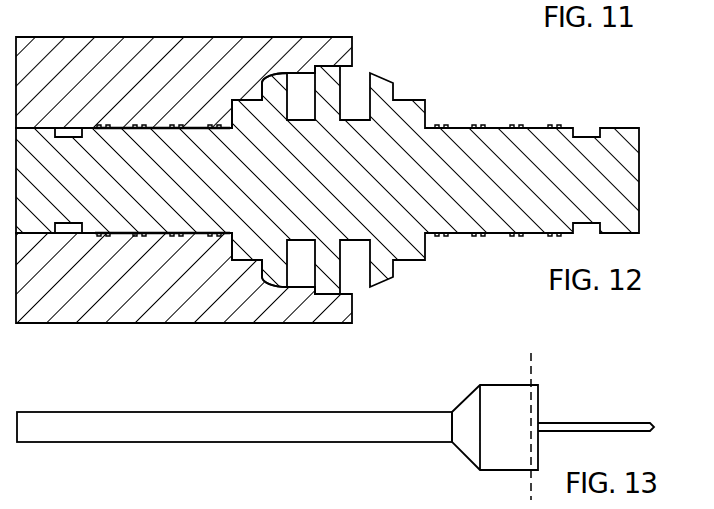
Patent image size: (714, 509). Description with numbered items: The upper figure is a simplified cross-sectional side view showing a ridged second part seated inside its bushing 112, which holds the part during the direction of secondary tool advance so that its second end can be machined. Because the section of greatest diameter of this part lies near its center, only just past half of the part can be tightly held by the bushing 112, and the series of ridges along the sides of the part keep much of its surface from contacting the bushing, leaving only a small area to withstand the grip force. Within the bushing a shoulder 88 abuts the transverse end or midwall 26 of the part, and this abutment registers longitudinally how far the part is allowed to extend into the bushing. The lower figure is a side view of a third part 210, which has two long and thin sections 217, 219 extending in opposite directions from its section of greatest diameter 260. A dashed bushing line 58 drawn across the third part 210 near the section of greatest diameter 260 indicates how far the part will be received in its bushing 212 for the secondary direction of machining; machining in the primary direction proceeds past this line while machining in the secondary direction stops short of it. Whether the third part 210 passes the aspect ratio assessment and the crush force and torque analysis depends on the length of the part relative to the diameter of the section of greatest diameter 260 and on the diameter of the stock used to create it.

In FIG. 12, the bushing 112 is at (72, 50).
In FIG. 12, the midwall 26 is at (230, 108).
In FIG. 12, the shoulder 88 is at (232, 248).
In FIG. 13, the third part 210 is at (339, 414).
In FIG. 13, the long thin section 217 is at (161, 427).
In FIG. 13, the section of greatest diameter 260 is at (510, 398).
In FIG. 13, the bushing line 58 is at (532, 370).
In FIG. 13, the long thin section 219 is at (588, 427).
In FIG. 13, the bushing 212 is at (176, 508).